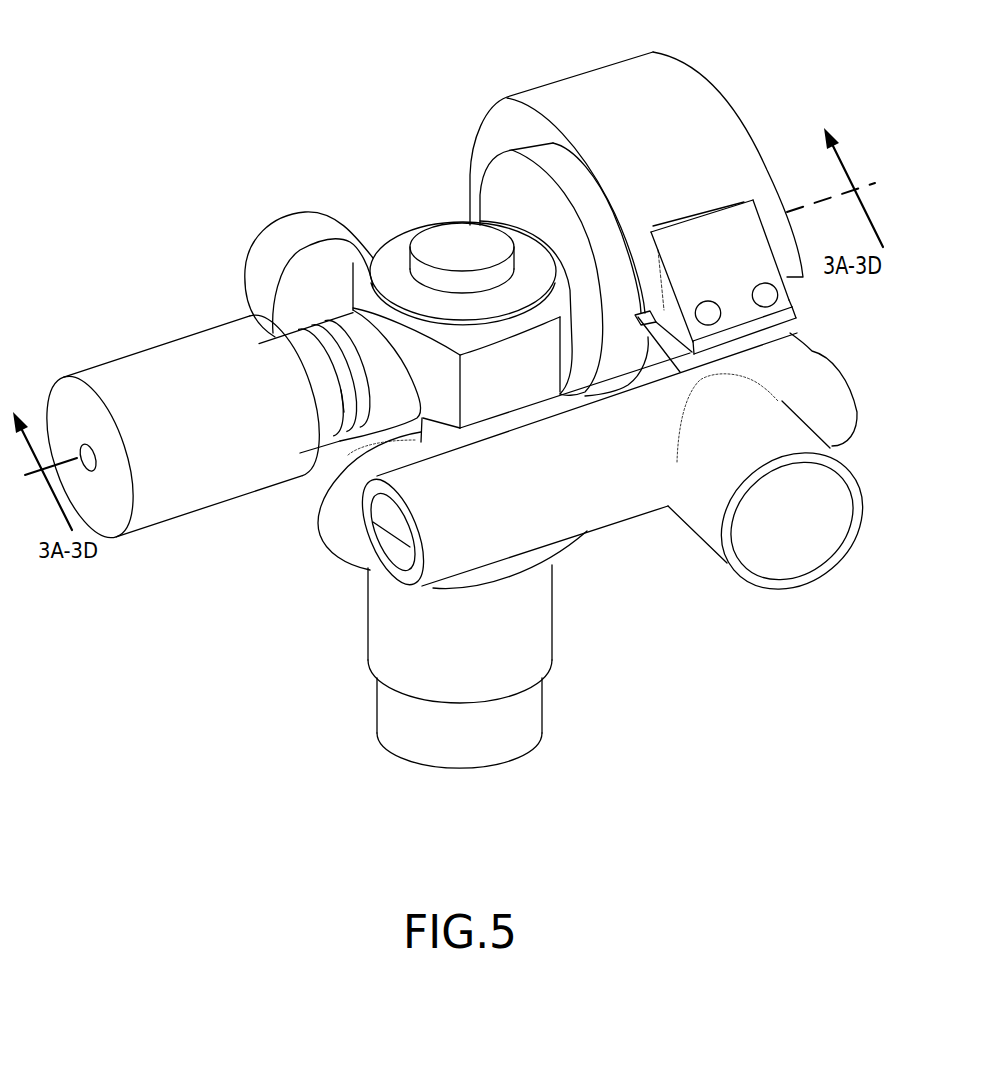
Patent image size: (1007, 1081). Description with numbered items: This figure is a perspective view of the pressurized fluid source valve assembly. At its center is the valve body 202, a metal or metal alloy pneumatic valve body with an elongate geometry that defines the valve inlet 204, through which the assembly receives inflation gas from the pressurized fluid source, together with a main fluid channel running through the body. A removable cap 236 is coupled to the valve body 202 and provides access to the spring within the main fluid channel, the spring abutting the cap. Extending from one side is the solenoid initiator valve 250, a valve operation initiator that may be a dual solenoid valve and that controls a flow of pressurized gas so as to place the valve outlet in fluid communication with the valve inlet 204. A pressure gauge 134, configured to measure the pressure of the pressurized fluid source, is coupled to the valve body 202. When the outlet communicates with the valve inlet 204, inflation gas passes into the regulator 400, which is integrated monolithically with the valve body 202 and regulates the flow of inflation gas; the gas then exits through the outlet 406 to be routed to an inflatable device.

The pressure gauge 134 is at (588, 77).
The valve body 202 is at (364, 280).
The removable cap 236 is at (448, 235).
The solenoid initiator valve 250 is at (175, 322).
The regulator 400 is at (597, 503).
The outlet 406 is at (795, 552).
The valve inlet 204 is at (477, 796).